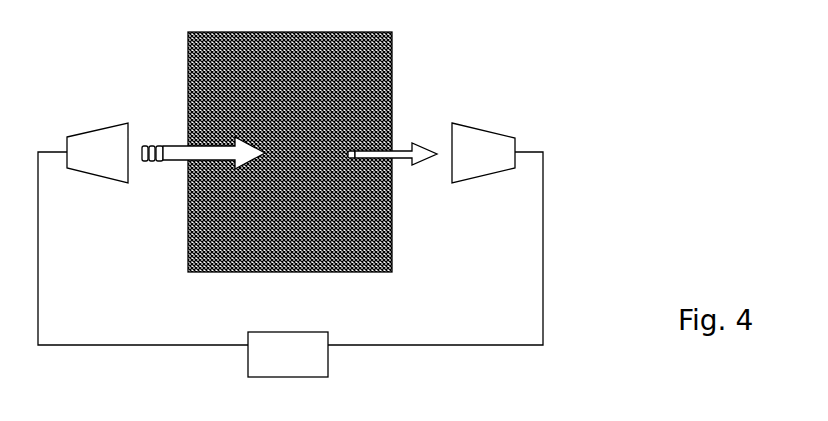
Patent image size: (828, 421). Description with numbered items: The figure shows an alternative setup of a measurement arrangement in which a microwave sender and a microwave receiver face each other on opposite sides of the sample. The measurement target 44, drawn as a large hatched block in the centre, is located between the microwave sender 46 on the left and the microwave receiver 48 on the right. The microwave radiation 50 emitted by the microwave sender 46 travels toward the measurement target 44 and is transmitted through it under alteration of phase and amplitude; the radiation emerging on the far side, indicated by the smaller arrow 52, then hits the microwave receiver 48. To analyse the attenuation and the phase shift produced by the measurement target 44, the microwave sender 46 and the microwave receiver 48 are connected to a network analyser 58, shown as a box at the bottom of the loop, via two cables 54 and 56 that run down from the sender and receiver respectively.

The measurement target 44 is at (382, 103).
The microwave sender 46 is at (107, 138).
The microwave receiver 48 is at (473, 133).
The microwave radiation 50 is at (190, 153).
The received signal 52 is at (413, 148).
The cable 54 is at (87, 343).
The cable 56 is at (440, 345).
The network analyser 58 is at (317, 357).